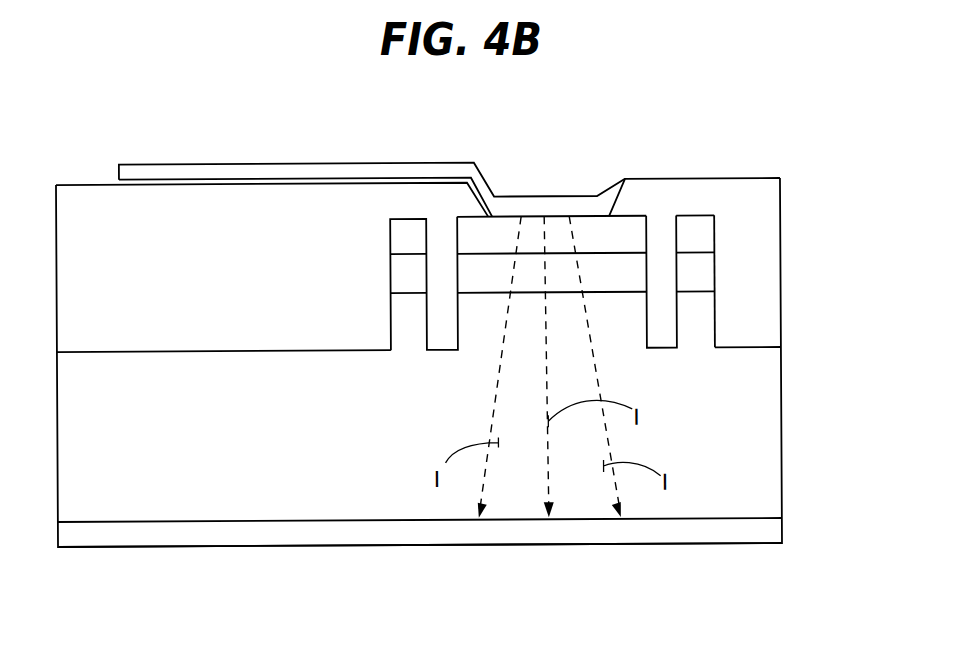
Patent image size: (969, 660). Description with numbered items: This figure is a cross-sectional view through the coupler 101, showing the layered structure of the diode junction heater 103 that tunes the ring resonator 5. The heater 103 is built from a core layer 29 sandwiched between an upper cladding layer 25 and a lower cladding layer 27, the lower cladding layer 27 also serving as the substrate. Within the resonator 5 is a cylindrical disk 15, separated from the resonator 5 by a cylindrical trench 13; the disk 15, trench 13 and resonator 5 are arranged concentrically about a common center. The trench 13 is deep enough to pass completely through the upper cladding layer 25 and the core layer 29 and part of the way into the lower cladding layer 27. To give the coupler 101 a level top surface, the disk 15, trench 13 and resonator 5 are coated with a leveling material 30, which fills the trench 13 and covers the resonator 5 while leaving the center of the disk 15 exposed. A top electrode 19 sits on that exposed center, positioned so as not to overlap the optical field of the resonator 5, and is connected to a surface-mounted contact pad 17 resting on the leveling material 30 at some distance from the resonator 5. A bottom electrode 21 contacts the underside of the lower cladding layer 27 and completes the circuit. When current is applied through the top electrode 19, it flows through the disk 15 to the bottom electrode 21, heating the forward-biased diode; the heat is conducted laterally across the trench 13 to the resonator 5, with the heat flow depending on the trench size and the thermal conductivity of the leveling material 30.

The coupler 101 is at (668, 562).
The bottom electrode 21 is at (177, 547).
The lower cladding layer 27 is at (750, 428).
The contact pad 17 is at (163, 162).
The top electrode 19 is at (549, 196).
The leveling material 30 is at (672, 192).
The upper cladding layer 25 is at (698, 237).
The core layer 29 is at (698, 268).
The ring resonator 5 is at (411, 337).
The cylindrical trench 13 is at (645, 310).
The cylindrical disk 15 is at (497, 348).
The diode junction heater 103 is at (535, 392).